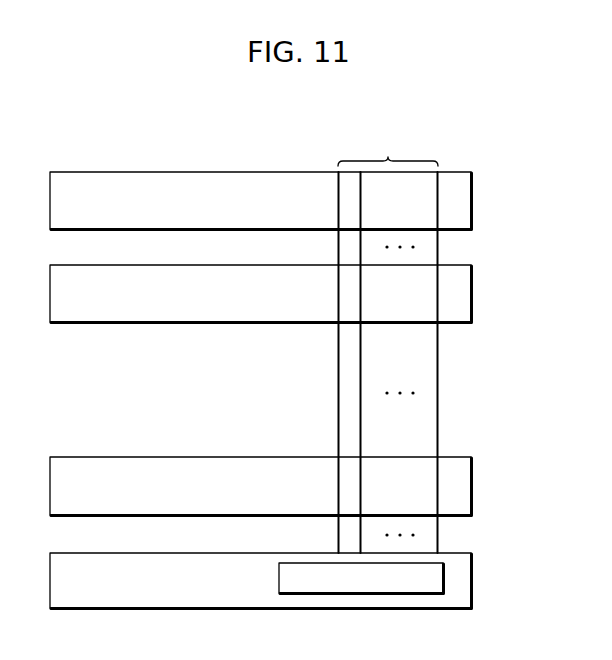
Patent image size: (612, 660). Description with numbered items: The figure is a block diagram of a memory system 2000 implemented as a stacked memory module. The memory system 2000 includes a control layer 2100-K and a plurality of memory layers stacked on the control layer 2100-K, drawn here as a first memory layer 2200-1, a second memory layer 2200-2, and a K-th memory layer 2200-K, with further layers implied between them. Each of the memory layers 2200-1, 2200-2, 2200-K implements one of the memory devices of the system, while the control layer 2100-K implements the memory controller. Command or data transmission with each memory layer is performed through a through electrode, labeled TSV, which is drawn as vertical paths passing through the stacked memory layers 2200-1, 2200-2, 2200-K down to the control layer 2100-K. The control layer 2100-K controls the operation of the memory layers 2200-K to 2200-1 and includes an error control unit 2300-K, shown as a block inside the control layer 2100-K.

The memory system 2000 is at (462, 131).
The memory layer 2200-1 is at (471, 200).
The memory layer 2200-2 is at (471, 294).
The memory layer 2200-K is at (471, 486).
The control layer 2100-K is at (471, 582).
The error control unit 2300-K is at (443, 580).